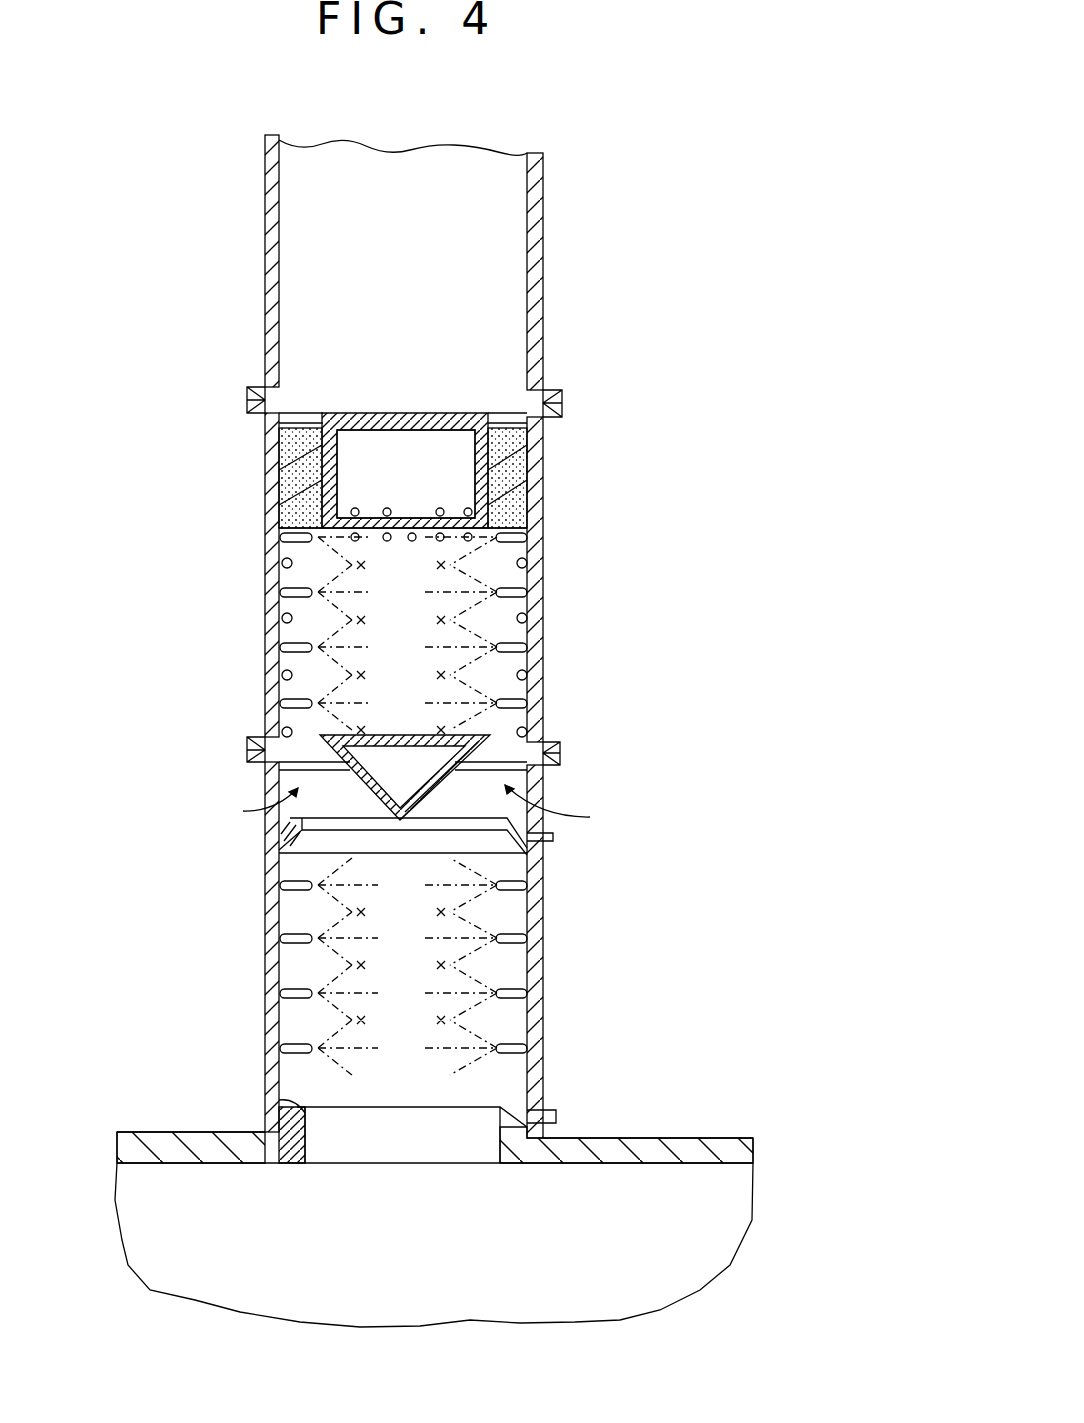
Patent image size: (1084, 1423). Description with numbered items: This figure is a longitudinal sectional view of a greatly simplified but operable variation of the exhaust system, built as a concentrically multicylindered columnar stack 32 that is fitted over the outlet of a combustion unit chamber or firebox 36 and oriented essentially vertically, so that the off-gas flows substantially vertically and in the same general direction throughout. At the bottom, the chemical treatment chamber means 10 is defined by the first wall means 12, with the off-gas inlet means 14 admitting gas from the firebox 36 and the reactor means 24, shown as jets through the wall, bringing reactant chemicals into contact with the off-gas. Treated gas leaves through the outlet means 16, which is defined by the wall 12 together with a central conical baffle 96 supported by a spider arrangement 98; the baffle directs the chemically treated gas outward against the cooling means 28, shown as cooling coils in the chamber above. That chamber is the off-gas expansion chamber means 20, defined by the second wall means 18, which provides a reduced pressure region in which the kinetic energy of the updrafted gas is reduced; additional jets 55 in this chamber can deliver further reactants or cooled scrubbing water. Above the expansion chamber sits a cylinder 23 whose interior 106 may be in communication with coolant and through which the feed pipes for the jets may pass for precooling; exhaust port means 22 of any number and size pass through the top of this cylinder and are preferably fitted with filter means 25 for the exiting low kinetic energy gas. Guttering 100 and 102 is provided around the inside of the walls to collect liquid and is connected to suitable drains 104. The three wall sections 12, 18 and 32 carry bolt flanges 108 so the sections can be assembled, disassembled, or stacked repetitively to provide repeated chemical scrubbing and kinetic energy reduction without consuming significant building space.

The chemical treatment chamber means 10 is at (375, 972).
The first wall means 12 is at (545, 905).
The off-gas inlet means 14 is at (340, 1127).
The outlet means 16 is at (416, 809).
The second wall means 18 is at (545, 648).
The off-gas expansion chamber means 20 is at (388, 575).
The exhaust port means 22 is at (303, 413).
The cylinder 23 is at (545, 430).
The reactor means 24 is at (283, 890).
The filter means 25 is at (285, 451).
The cooling means 28 is at (355, 508).
The columnar stack 32 is at (543, 300).
The firebox 36 is at (266, 1232).
The additional jets 55 is at (265, 630).
The central conical baffle 96 is at (436, 780).
The spider arrangement 98 is at (268, 757).
The guttering 100 is at (278, 830).
The guttering 102 is at (268, 1100).
The drains 104 is at (558, 840).
The interior of cylinder 106 is at (370, 463).
The bolt flanges 108 is at (258, 386).